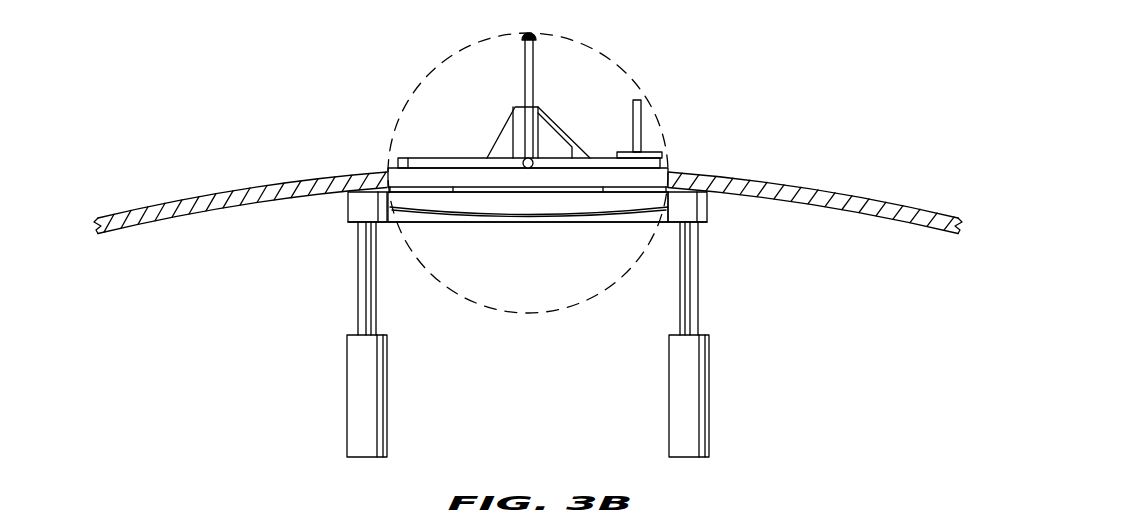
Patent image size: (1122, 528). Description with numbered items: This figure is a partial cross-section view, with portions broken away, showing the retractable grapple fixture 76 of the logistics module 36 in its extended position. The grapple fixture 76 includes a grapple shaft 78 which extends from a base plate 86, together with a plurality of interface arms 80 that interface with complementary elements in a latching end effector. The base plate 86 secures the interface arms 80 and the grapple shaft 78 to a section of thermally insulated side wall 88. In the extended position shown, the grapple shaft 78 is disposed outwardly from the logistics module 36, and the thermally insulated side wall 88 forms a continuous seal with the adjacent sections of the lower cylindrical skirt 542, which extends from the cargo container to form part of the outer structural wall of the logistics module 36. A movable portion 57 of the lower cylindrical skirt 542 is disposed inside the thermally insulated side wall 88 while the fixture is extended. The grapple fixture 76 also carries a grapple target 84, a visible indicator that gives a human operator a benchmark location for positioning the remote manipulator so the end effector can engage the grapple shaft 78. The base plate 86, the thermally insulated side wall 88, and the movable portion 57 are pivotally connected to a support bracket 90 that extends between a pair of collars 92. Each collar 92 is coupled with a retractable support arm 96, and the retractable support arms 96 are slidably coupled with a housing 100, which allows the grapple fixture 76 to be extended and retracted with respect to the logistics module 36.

The logistics module 36 is at (877, 187).
The movable portion of the lower cylindrical skirt 57 is at (523, 213).
The grapple fixture 76 is at (658, 72).
The grapple shaft 78 is at (533, 75).
The interface arms 80 is at (492, 127).
The grapple target 84 is at (643, 135).
The base plate 86 is at (432, 162).
The thermally insulated side wall 88 is at (403, 179).
The support bracket 90 is at (615, 213).
The collars 92 is at (352, 213).
The retractable support arms 96 is at (358, 280).
The housing 100 is at (348, 395).
The lower cylindrical skirt 542 is at (352, 180).